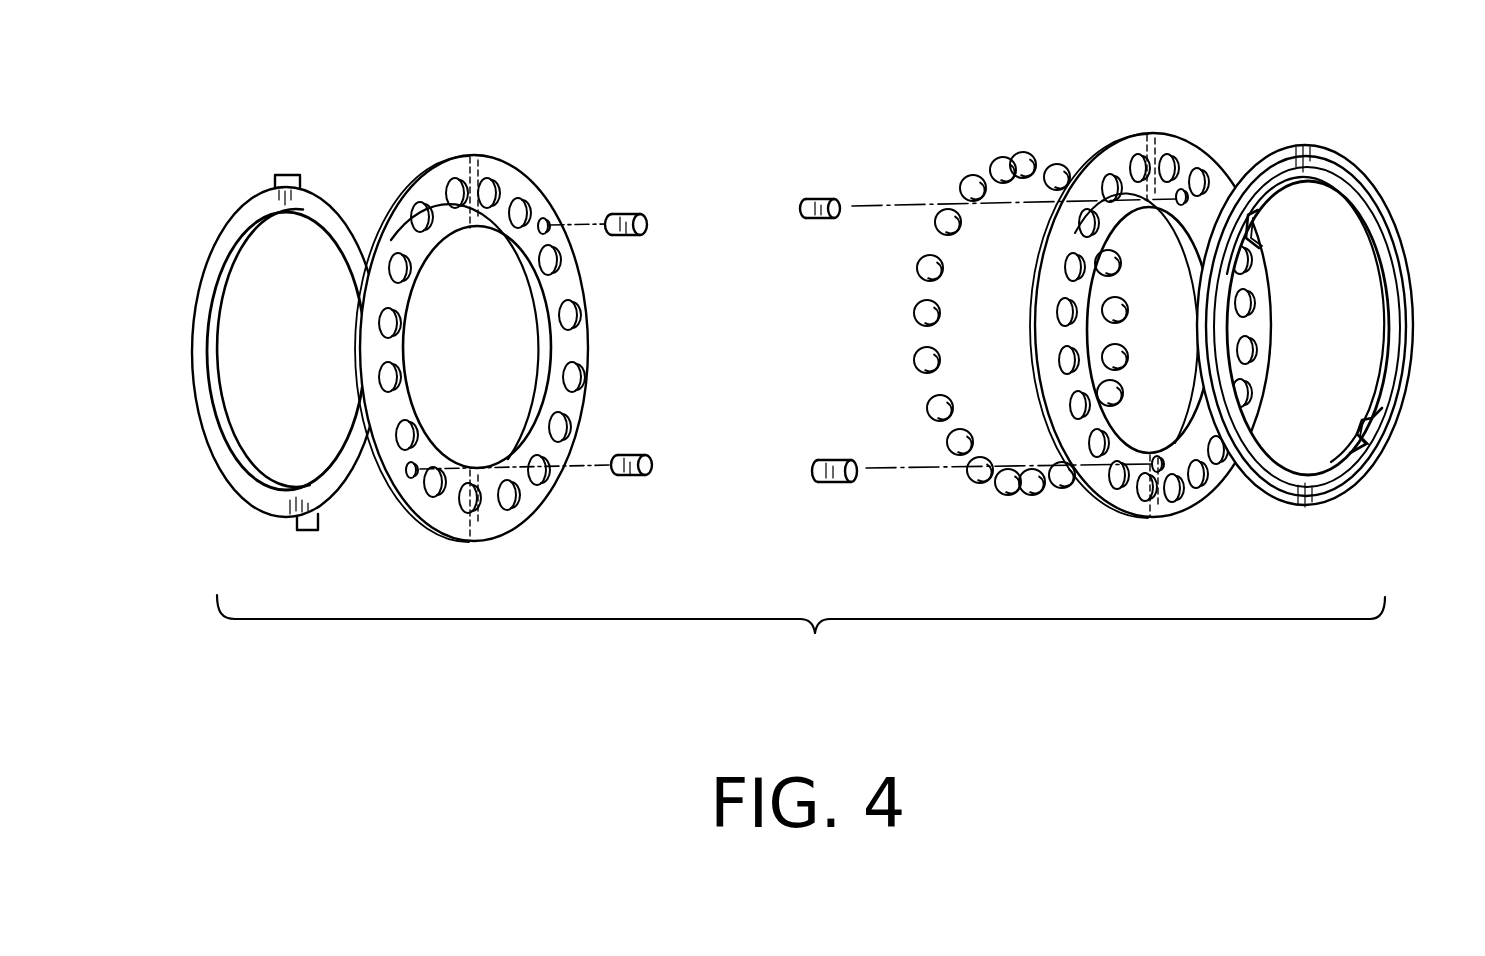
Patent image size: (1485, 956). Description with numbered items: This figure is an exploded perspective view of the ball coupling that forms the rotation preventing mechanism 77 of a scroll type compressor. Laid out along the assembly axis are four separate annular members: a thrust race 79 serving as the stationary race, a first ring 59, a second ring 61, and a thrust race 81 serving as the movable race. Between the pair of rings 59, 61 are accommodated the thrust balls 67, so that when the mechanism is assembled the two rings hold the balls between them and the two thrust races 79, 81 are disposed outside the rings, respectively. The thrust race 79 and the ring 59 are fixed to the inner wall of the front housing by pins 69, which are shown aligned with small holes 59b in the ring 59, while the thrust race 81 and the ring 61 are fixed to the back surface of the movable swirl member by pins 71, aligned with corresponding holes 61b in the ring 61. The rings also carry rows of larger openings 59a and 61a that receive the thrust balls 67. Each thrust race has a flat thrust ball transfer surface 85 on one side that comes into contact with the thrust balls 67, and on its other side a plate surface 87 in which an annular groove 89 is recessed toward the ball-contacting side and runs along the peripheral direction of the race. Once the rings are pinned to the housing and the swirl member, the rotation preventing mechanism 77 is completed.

The ring 59 is at (468, 157).
The ball holes 59a is at (493, 190).
The pin holes 59b is at (545, 218).
The ring 61 is at (1128, 135).
The ball holes 61a is at (1148, 160).
The pin holes 61b is at (1187, 188).
The thrust balls 67 is at (1003, 155).
The pins 69 is at (630, 212).
The pins 71 is at (821, 197).
The rotation preventing mechanism 77 is at (801, 635).
The thrust race 79 is at (283, 175).
The thrust race 81 is at (1303, 145).
The thrust ball transfer surface 85 is at (330, 206).
The plate surface 87 is at (1330, 148).
The groove 89 is at (1362, 210).